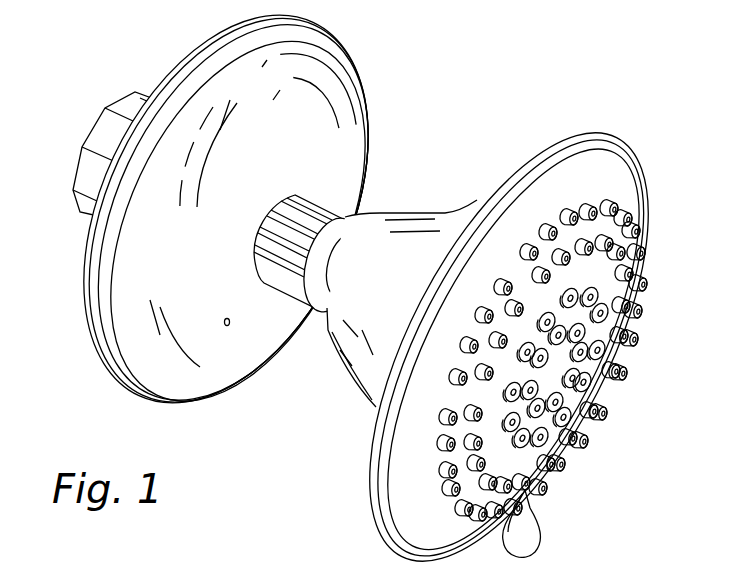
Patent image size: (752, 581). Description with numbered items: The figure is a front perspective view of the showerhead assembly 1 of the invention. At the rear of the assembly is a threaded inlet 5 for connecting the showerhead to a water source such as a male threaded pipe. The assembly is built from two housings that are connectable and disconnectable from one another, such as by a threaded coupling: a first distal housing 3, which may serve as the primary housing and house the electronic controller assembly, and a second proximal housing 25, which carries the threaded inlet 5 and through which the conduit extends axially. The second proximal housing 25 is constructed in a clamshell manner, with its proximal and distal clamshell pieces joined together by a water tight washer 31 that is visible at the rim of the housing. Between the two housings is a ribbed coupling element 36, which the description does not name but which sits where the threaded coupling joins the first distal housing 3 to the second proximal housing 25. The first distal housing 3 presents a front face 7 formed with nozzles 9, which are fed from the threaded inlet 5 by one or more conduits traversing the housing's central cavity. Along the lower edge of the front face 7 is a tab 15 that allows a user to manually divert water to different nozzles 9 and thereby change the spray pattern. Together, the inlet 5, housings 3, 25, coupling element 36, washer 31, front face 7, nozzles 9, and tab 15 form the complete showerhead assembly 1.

The showerhead assembly 1 is at (532, 107).
The first distal housing 3 is at (618, 167).
The threaded inlet 5 is at (103, 120).
The front face 7 is at (603, 282).
The nozzles 9 is at (607, 368).
The tab 15 is at (540, 530).
The second proximal housing 25 is at (190, 357).
The water tight washer 31 is at (112, 360).
The connector knob 36 is at (229, 325).